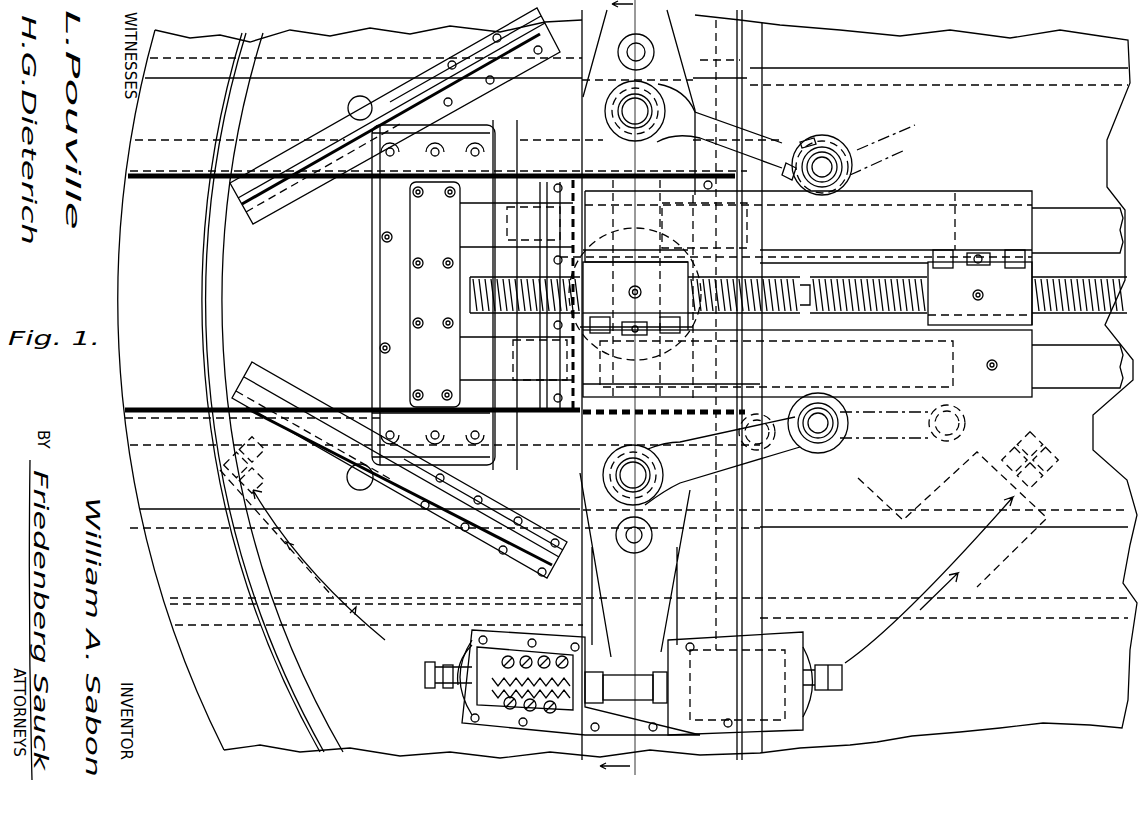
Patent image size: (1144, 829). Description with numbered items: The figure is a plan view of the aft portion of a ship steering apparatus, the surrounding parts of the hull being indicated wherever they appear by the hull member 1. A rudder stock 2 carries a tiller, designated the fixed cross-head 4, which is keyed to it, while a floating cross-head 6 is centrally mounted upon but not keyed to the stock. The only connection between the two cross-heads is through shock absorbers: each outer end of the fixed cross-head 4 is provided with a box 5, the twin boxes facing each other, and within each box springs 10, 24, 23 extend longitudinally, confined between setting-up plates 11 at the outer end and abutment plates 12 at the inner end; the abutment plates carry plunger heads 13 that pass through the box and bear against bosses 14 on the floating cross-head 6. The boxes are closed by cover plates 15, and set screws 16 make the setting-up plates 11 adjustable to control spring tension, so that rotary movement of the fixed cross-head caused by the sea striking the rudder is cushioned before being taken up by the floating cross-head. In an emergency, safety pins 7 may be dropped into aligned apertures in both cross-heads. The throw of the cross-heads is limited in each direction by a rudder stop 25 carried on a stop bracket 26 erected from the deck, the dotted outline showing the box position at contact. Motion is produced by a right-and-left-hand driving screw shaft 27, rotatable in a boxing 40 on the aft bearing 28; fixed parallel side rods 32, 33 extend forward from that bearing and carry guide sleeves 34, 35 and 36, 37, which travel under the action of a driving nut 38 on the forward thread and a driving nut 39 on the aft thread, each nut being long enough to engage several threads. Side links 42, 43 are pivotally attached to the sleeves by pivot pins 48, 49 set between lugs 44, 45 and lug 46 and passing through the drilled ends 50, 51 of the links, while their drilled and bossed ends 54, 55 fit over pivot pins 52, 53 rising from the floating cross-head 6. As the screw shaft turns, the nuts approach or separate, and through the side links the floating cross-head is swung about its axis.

The hull member 1 is at (627, 386).
The rudder stock 2 is at (690, 290).
The tiller (fixed cross-head) 4 is at (693, 27).
The box (casing) for the shock absorber 5 is at (803, 660).
The floating cross-head 6 is at (667, 43).
The safety pins 7 is at (633, 52).
The spring 10 is at (530, 652).
The setting-up plates 11 is at (510, 690).
The abutment plates 12 is at (580, 657).
The plunger heads 13 is at (702, 758).
The bosses 14 is at (653, 685).
The cover plates 15 is at (800, 724).
The set screws 16 is at (425, 675).
The spring 23 is at (443, 680).
The spring 24 is at (460, 692).
The rudder stop 25 is at (413, 90).
The stop brackets 26 is at (337, 137).
The driving screw shaft 27 is at (848, 278).
The aft bearing 28 is at (433, 295).
The side rod 32 is at (1077, 230).
The side rod 33 is at (1077, 366).
The guide sleeve 34 is at (972, 230).
The guide sleeve 35 is at (645, 213).
The guide sleeve 36 is at (1010, 378).
The guide sleeve 37 is at (650, 377).
The driving nut 38 is at (980, 293).
The driving nut 39 is at (635, 294).
The boxing 40 is at (410, 278).
The side link 42 is at (775, 152).
The side link 43 is at (787, 443).
The lug 44 is at (852, 184).
The lug 45 is at (812, 143).
The lug 46 is at (850, 412).
The pivot pin 48 is at (830, 163).
The pivot pin 49 is at (848, 440).
The drilled end 50 is at (898, 144).
The drilled end 51 is at (832, 452).
The pivot pin 52 is at (640, 114).
The pivot pin 53 is at (637, 477).
The drilled and bossed end 54 is at (603, 108).
The drilled and bossed end 55 is at (603, 475).